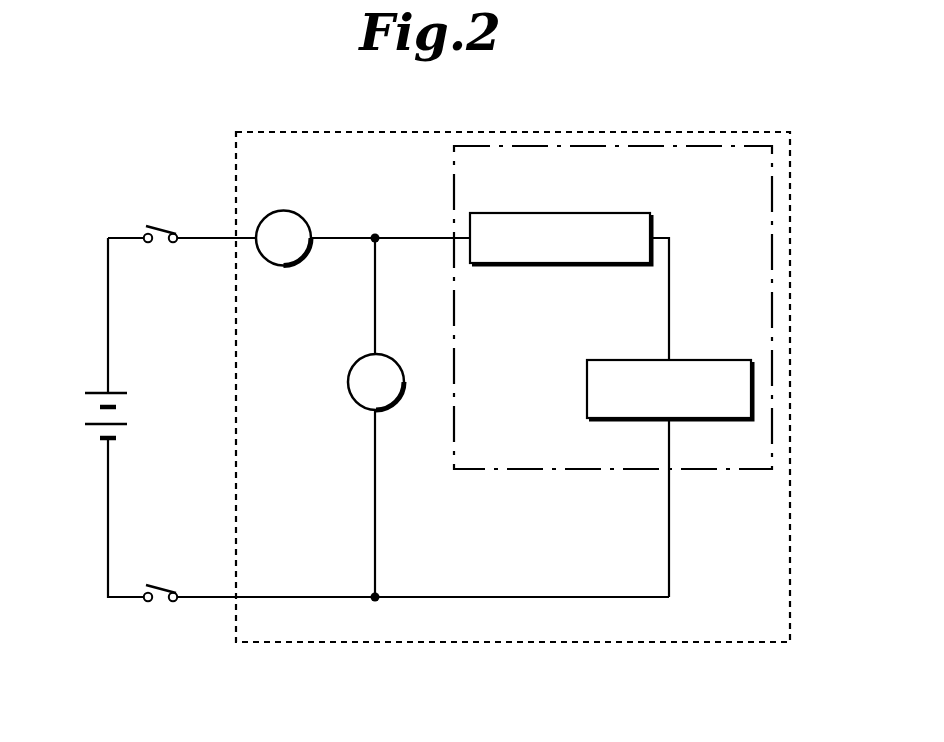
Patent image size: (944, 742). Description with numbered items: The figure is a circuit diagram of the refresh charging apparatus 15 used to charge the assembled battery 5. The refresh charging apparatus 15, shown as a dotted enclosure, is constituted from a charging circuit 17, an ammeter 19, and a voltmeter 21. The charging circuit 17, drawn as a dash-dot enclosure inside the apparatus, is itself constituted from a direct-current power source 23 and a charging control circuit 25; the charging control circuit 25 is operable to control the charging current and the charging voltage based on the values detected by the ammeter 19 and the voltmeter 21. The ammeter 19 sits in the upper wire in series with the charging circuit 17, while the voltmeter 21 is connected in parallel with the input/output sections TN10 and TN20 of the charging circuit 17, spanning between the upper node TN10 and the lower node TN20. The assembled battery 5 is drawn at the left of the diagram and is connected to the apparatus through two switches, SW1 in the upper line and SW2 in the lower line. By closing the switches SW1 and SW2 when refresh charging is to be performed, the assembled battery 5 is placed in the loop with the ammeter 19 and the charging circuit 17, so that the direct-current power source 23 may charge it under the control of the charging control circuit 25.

The assembled battery 5 is at (94, 426).
The refresh charging apparatus 15 is at (481, 644).
The charging circuit 17 is at (714, 471).
The ammeter 19 is at (307, 218).
The voltmeter 21 is at (386, 355).
The direct-current power source 23 is at (721, 359).
The charging control circuit 25 is at (551, 212).
The switch SW1 is at (165, 226).
The switch SW2 is at (160, 604).
The input/output section TN10 is at (382, 218).
The input/output section TN20 is at (382, 621).